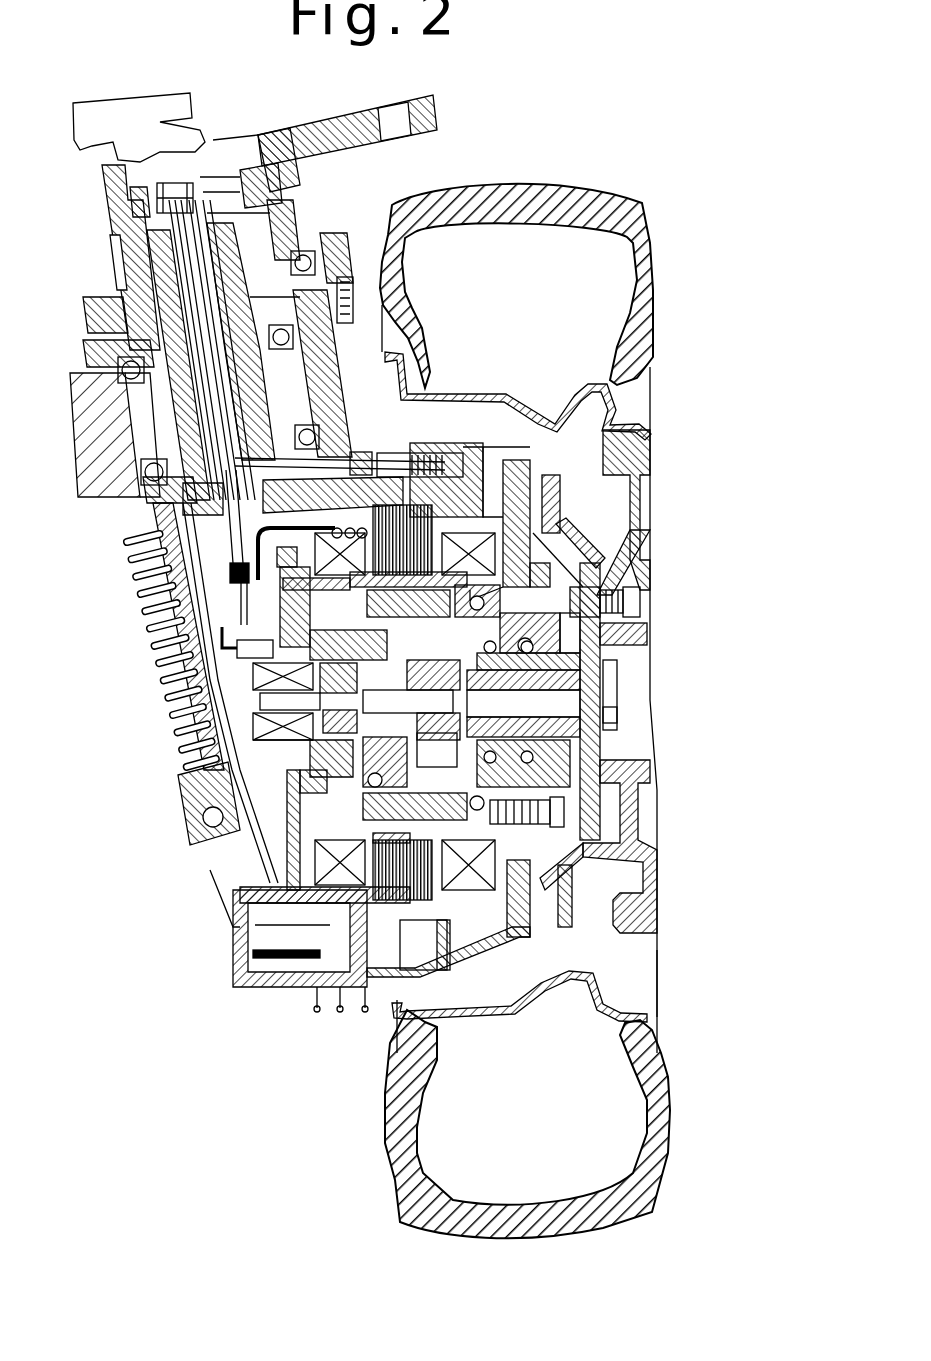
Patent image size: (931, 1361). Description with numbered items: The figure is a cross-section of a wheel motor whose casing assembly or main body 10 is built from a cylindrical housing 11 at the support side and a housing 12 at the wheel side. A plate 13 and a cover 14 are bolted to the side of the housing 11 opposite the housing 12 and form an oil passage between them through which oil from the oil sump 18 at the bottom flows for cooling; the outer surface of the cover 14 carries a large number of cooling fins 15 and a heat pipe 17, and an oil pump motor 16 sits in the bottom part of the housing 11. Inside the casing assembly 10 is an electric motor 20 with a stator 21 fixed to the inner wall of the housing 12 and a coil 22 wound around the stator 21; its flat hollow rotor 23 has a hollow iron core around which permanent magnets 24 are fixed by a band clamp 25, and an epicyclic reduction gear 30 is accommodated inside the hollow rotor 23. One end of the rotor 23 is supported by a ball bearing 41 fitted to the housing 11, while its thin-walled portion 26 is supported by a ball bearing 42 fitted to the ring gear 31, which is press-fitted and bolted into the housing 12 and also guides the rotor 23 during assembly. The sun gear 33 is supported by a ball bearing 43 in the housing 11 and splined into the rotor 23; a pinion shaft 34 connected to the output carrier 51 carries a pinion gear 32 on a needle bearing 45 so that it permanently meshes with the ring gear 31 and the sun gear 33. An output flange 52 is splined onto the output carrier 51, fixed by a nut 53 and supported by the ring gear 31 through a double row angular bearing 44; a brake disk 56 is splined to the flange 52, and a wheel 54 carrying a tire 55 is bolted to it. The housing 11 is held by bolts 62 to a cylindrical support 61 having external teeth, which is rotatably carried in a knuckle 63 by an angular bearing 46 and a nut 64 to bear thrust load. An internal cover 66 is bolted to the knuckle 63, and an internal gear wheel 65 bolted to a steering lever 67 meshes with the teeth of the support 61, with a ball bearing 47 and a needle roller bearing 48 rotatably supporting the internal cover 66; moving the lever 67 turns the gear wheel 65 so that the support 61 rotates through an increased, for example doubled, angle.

The casing assembly 10 is at (385, 1003).
The cylindrical housing 11 is at (273, 853).
The housing 12 is at (530, 470).
The plate 13 is at (142, 594).
The cover 14 is at (132, 566).
The cooling fins 15 is at (130, 540).
The oil pump motor 16 is at (268, 980).
The heat pipe 17 is at (182, 807).
The oil sump 18 is at (475, 945).
The electric motor 20 is at (292, 775).
The stator 21 is at (375, 508).
The coil 22 is at (470, 545).
The rotor 23 is at (365, 598).
The permanent magnets 24 is at (380, 827).
The band clamp 25 is at (475, 862).
The thin-walled portion 26 is at (568, 532).
The epicyclic reduction gear 30 is at (253, 673).
The ring gear 31 is at (640, 610).
The pinion gear 32 is at (523, 703).
The sun gear 33 is at (437, 750).
The pinion shaft 34 is at (411, 700).
The ball bearing 41 is at (385, 759).
The ball bearing 42 is at (530, 812).
The ball bearing 43 is at (336, 758).
The double row angular bearing 44 is at (532, 641).
The needle bearing 45 is at (433, 601).
The angular bearing 46 is at (122, 378).
The ball bearing 47 is at (98, 312).
The needle roller bearing 48 is at (118, 256).
The output carrier 51 is at (565, 725).
The output flange 52 is at (632, 790).
The nut 53 is at (612, 671).
The wheel 54 is at (648, 447).
The tire 55 is at (640, 232).
The brake disk 56 is at (560, 487).
The support 61 is at (128, 395).
The bolts 62 is at (398, 448).
The knuckle 63 is at (86, 440).
The nut 64 is at (100, 342).
The internal gear wheel 65 is at (110, 265).
The internal cover 66 is at (108, 240).
The steering lever 67 is at (437, 128).